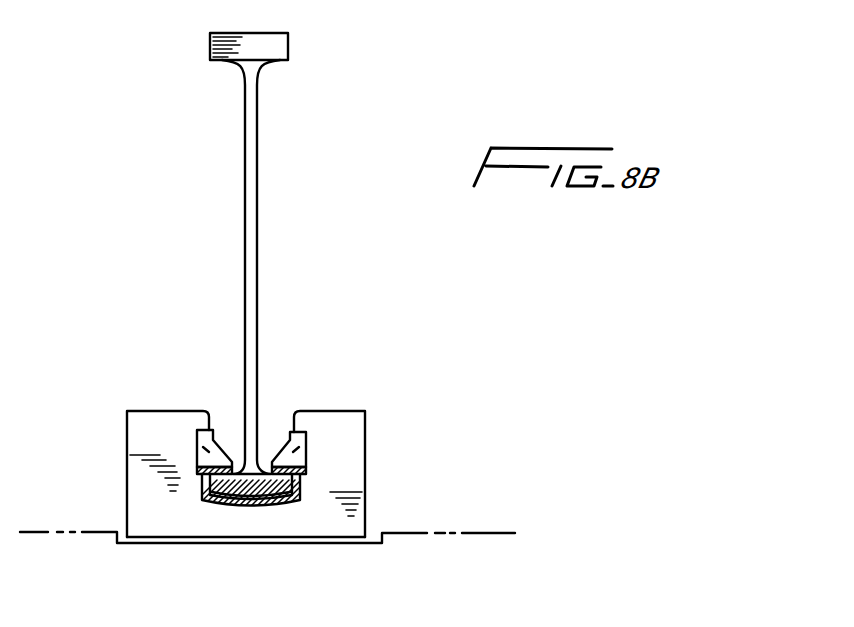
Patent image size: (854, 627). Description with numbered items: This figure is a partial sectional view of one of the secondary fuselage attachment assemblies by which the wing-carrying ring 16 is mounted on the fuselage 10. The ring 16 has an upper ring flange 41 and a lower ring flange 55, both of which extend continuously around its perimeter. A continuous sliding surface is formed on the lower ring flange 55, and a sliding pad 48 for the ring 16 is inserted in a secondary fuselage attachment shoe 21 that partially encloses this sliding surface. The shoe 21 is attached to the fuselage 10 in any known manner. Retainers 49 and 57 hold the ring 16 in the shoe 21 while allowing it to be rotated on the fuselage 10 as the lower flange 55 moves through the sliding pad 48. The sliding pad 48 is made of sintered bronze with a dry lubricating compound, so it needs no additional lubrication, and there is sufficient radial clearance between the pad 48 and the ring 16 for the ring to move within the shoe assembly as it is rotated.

The upper ring flange 41 is at (289, 50).
The ring 16 is at (257, 222).
The secondary fuselage attachment shoe 21 is at (368, 466).
The retainer 49 is at (189, 411).
The retainer 57 is at (310, 416).
The sliding pad 48 is at (272, 505).
The lower ring flange 55 is at (226, 487).
The fuselage 10 is at (480, 532).